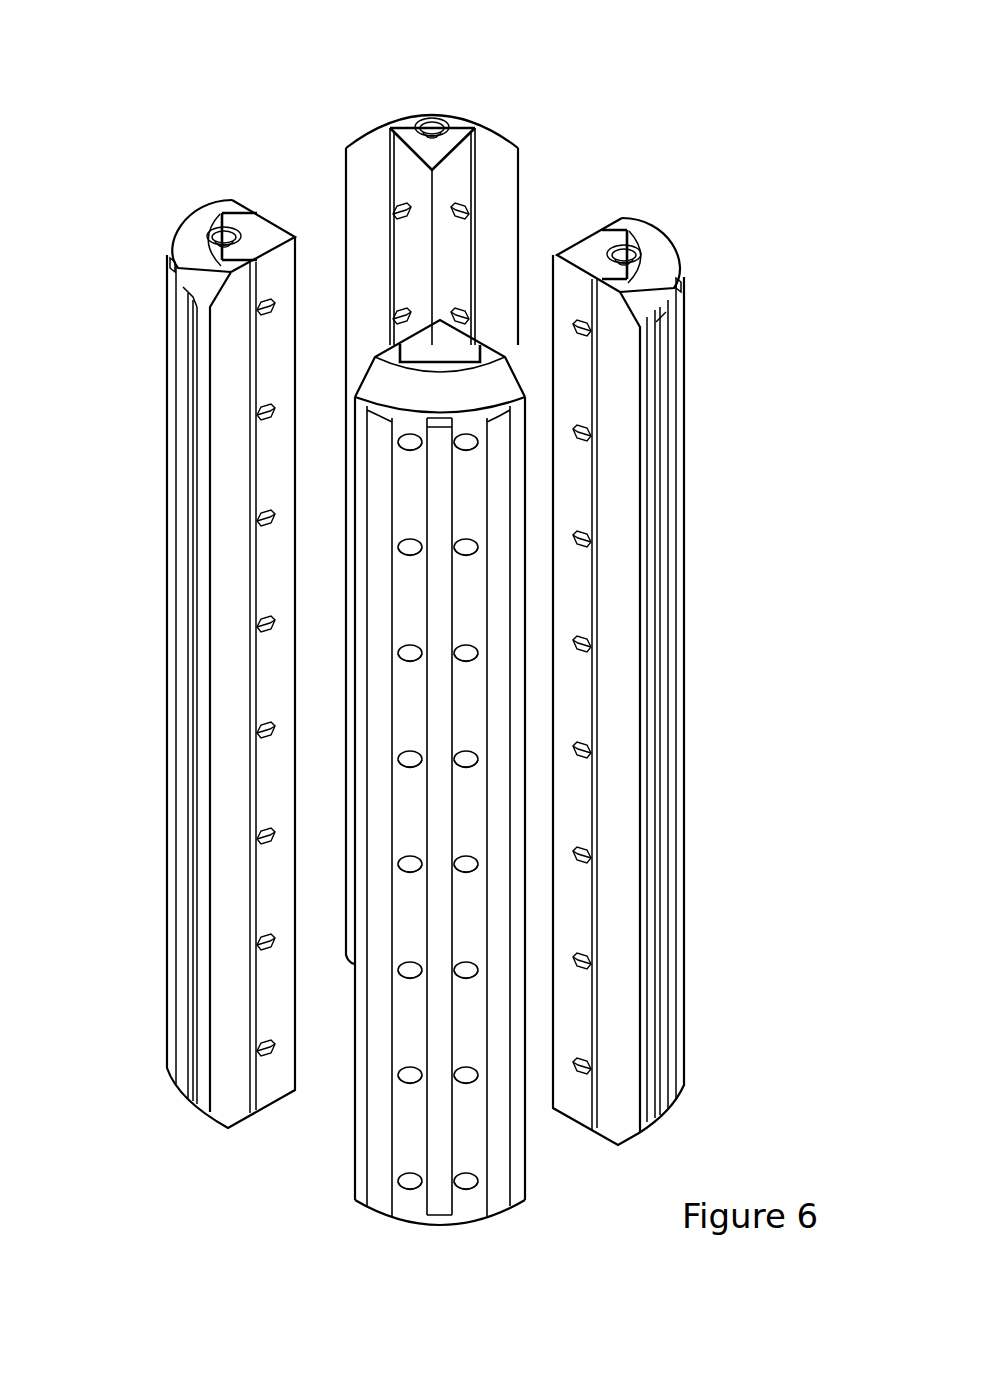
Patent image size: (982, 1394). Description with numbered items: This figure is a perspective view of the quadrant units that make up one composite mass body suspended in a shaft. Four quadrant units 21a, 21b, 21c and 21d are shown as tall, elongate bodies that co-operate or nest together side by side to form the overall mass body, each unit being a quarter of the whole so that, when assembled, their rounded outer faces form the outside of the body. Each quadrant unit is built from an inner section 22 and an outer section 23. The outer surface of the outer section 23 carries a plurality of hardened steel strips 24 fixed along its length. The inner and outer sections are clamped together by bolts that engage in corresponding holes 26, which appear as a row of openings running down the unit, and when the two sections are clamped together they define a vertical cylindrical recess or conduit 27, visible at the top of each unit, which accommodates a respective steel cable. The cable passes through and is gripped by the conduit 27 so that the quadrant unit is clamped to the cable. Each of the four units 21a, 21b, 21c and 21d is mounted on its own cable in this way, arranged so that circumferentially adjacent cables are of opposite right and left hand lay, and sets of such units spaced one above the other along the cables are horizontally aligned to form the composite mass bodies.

The quadrant unit 21a is at (630, 566).
The quadrant unit 21b is at (378, 1170).
The quadrant unit 21c is at (215, 862).
The quadrant unit 21d is at (369, 128).
The inner section 22 is at (591, 243).
The outer section 23 is at (488, 135).
The hardened steel strips 24 is at (668, 436).
The holes 26 is at (400, 1082).
The vertical cylindrical recess or conduit 27 is at (221, 208).